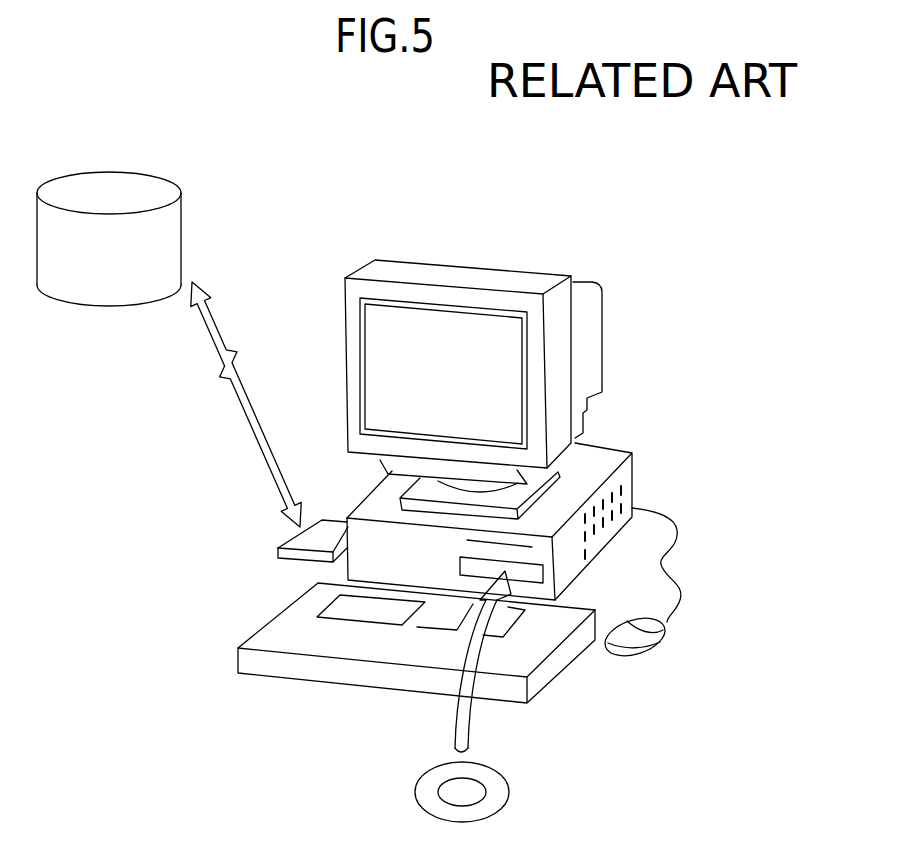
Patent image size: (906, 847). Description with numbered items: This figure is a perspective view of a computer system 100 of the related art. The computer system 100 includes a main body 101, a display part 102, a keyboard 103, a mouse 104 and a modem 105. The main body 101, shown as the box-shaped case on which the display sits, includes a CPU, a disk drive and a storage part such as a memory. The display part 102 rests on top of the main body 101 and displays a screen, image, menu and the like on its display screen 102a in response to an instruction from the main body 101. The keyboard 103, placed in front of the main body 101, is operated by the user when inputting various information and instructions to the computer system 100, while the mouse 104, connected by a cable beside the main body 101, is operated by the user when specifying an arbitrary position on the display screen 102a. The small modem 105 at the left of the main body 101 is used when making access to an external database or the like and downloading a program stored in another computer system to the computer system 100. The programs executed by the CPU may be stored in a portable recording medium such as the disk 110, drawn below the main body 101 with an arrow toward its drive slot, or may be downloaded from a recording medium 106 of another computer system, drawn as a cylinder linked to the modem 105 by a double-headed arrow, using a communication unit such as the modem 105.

The computer system 100 is at (582, 206).
The main body 101 is at (622, 452).
The display part 102 is at (480, 355).
The display screen 102a is at (410, 327).
The keyboard 103 is at (283, 626).
The mouse 104 is at (635, 648).
The modem 105 is at (288, 542).
The recording medium 106 is at (157, 179).
The disk 110 is at (507, 790).